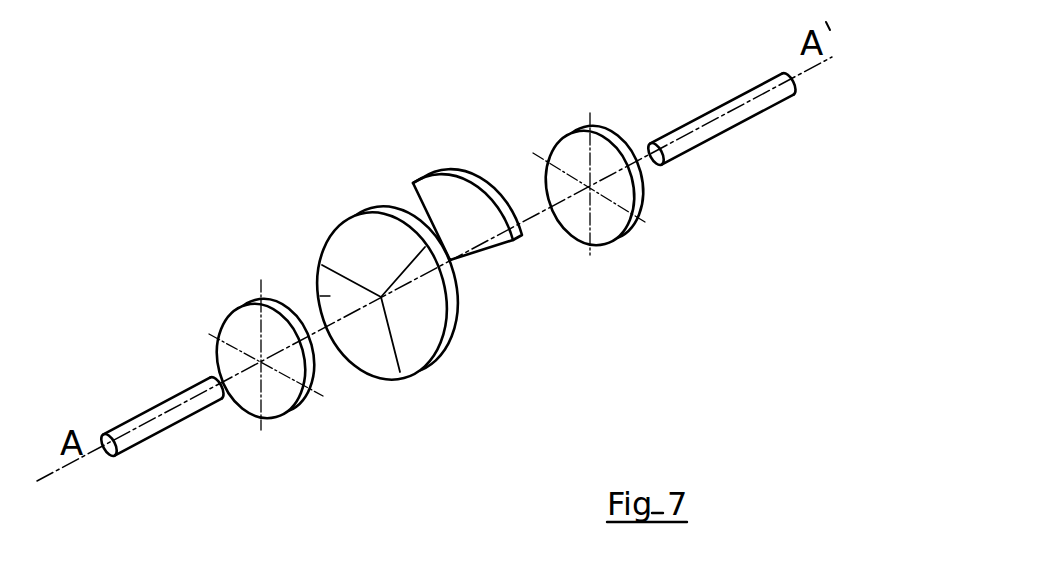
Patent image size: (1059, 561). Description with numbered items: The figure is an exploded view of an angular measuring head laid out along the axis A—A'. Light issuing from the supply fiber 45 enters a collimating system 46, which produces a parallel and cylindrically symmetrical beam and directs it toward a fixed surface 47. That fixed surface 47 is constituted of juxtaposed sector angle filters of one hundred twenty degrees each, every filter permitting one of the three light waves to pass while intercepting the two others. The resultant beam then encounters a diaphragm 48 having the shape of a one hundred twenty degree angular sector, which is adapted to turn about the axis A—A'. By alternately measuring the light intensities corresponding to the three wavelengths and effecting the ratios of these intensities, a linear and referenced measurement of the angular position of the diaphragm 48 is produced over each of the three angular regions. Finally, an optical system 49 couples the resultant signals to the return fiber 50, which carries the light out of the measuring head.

The supply fiber 45 is at (163, 423).
The collimating system 46 is at (285, 410).
The fixed surface 47 is at (430, 353).
The diaphragm 48 is at (517, 243).
The optical system 49 is at (620, 223).
The output optical fiber / light guide rod 50 is at (733, 120).